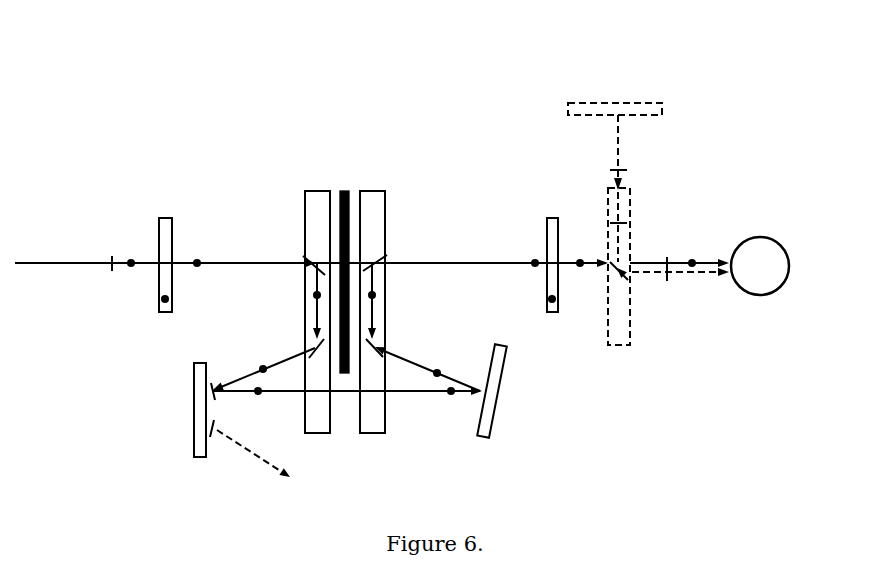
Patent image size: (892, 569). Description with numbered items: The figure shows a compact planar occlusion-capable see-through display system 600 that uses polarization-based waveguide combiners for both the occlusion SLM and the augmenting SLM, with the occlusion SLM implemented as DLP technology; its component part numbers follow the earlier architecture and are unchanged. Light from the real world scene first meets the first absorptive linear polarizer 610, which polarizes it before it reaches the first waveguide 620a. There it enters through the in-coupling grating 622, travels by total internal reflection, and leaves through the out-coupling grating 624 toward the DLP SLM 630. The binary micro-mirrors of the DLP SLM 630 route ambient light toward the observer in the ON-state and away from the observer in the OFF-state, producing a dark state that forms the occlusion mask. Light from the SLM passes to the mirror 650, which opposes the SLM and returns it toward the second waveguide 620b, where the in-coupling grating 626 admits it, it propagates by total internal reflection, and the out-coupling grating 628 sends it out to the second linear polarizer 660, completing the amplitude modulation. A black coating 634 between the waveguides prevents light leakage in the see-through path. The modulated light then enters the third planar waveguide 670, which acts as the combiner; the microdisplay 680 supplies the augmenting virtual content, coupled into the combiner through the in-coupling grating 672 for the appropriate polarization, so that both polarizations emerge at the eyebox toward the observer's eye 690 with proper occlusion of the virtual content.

The system 600 is at (157, 56).
The first absorptive linear polarizer 610 is at (160, 218).
The first waveguide 620a is at (310, 190).
The second waveguide 620b is at (377, 190).
The in-coupling grating 622 is at (305, 258).
The out-coupling grating 624 is at (310, 356).
The in-coupling grating 626 is at (378, 356).
The out-coupling grating 628 is at (385, 260).
The DLP SLM 630 is at (194, 378).
The black coating 634 is at (338, 190).
The mirror 650 is at (507, 392).
The second linear polarizer 660 is at (546, 218).
The third planar waveguide 670 is at (630, 345).
The in-coupling grating 672 is at (629, 265).
The microdisplay 680 is at (630, 103).
The observer's eye 690 is at (752, 295).